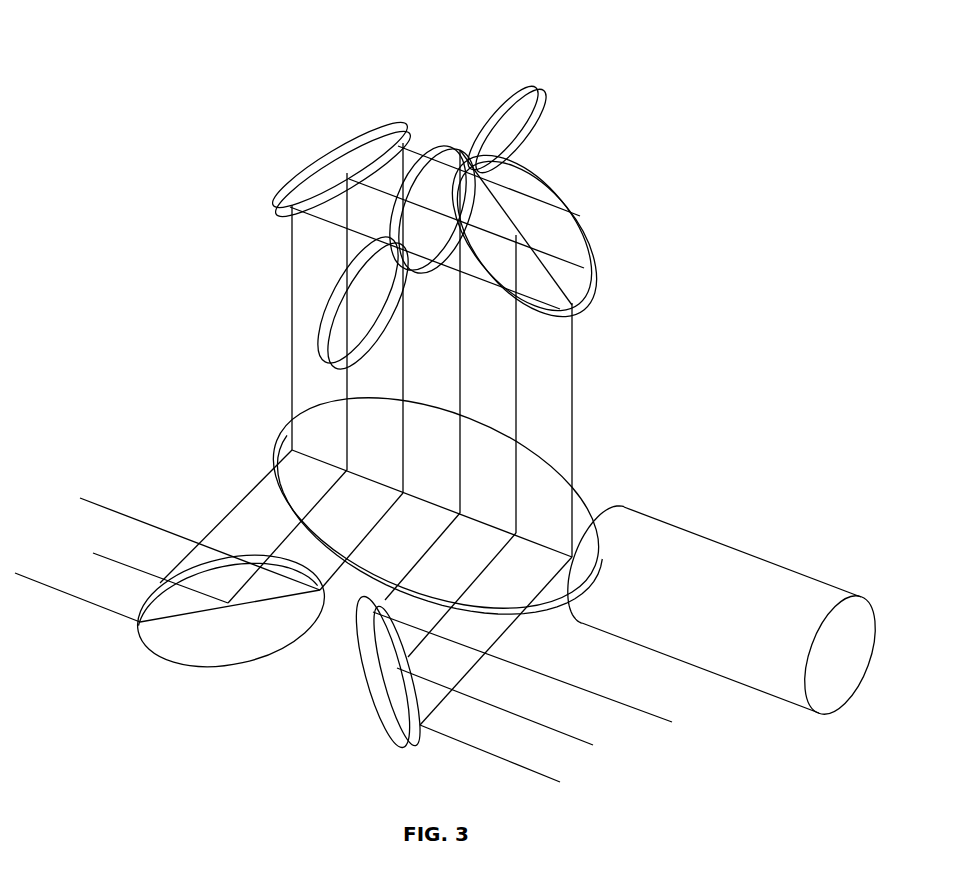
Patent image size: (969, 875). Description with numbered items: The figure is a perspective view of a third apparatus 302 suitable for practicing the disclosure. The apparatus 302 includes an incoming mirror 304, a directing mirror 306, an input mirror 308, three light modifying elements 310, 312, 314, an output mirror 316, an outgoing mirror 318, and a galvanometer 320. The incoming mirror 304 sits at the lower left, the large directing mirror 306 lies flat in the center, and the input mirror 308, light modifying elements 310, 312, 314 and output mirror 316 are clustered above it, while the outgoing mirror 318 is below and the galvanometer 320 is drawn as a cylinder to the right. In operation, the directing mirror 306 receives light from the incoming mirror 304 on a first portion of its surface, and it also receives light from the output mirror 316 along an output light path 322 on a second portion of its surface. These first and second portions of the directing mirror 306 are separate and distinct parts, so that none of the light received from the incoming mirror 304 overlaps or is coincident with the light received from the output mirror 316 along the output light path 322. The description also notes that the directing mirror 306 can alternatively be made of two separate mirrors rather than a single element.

The apparatus 302 is at (715, 284).
The incoming mirror 304 is at (175, 673).
The directing mirror 306 is at (261, 437).
The input mirror 308 is at (296, 158).
The light modifying element 310 is at (319, 287).
The light modifying element 312 is at (438, 132).
The light modifying element 314 is at (531, 79).
The output mirror 316 is at (597, 311).
The outgoing mirror 318 is at (354, 694).
The galvanometer 320 is at (795, 556).
The output light path 322 is at (538, 380).